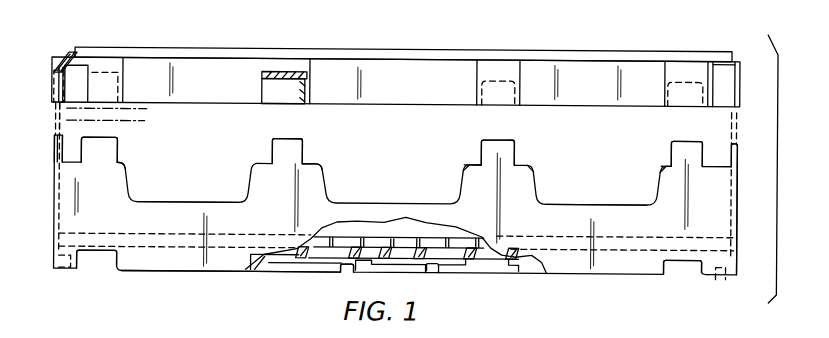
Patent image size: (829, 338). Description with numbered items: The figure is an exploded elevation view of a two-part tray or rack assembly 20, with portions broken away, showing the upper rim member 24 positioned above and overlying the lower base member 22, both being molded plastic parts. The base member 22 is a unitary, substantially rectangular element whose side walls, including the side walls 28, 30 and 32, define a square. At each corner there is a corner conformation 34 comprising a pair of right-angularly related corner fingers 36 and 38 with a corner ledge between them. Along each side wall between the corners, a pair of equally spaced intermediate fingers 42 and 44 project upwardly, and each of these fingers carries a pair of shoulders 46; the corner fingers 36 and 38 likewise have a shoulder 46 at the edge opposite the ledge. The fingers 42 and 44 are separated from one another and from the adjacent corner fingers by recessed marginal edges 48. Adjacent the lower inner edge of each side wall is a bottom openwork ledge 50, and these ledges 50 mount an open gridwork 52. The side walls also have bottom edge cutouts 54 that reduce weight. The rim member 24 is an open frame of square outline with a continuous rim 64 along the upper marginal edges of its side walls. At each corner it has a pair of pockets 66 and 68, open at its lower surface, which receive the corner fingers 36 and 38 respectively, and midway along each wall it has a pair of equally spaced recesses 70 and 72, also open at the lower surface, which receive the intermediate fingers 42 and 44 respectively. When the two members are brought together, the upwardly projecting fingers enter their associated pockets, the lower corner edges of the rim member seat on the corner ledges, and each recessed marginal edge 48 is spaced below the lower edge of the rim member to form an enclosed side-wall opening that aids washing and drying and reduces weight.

The tray assembly 20 is at (596, 27).
The base member 22 is at (606, 203).
The rim member 24 is at (737, 33).
The side wall 28 is at (738, 232).
The side wall 30 is at (178, 263).
The side wall 32 is at (55, 229).
The corner conformation 34 is at (62, 195).
The corner finger 36 is at (56, 151).
The corner finger 38 is at (117, 150).
The intermediate finger 42 is at (300, 150).
The intermediate finger 44 is at (508, 148).
The shoulder 46 is at (124, 162).
The recessed marginal edge 48 is at (175, 200).
The bottom openwork ledge 50 is at (411, 254).
The open gridwork 52 is at (383, 229).
The bottom edge cutout 54 is at (100, 252).
The continuous rim 64 is at (66, 51).
The corner pocket 66 is at (55, 78).
The corner pocket 68 is at (113, 60).
The intermediate recess 70 is at (286, 70).
The intermediate recess 72 is at (497, 73).